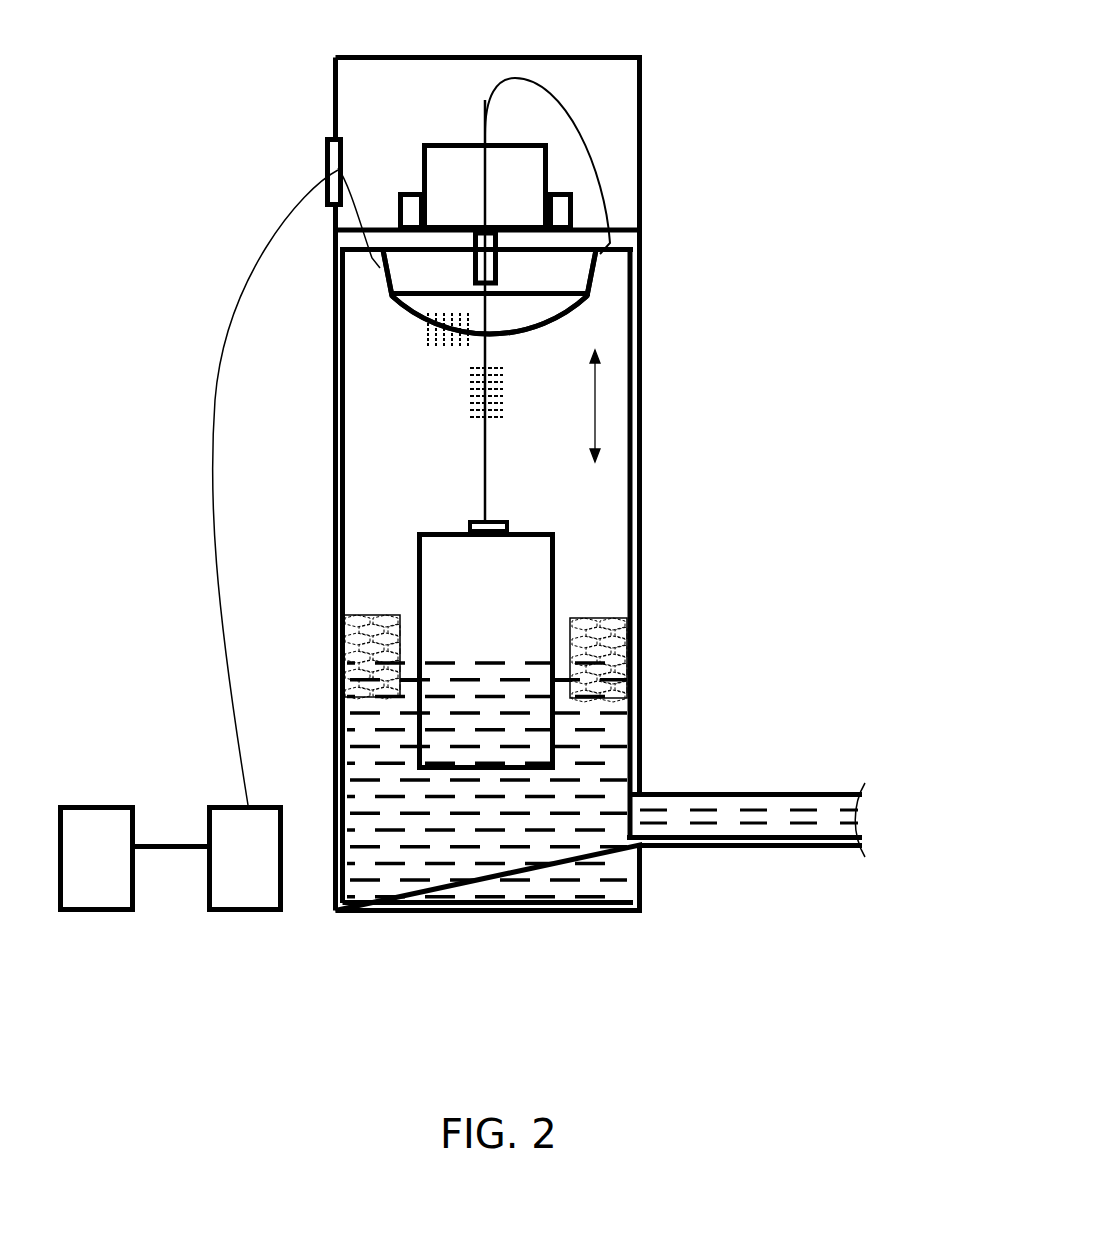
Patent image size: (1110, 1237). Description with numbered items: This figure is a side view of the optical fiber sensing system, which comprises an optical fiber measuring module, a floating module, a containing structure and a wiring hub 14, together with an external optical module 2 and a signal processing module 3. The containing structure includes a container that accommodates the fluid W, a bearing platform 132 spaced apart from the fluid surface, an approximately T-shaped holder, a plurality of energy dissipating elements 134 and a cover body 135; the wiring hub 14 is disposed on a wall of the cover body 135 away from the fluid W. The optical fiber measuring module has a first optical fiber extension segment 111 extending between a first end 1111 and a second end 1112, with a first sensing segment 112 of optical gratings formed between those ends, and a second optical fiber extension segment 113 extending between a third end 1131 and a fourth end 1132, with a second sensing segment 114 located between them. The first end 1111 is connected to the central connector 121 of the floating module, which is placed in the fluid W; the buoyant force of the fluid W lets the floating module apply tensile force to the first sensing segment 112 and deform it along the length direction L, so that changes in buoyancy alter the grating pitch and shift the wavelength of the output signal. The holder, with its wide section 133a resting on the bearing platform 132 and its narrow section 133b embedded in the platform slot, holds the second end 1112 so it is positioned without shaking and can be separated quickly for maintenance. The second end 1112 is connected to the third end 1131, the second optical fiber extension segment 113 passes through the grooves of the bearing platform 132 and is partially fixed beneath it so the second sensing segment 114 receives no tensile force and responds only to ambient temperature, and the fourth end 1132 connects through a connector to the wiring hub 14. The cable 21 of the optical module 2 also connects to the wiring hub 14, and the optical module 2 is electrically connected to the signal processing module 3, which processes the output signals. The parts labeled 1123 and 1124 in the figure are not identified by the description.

The optical module 2 is at (243, 893).
The signal processing module 3 is at (88, 893).
The cable 21 is at (222, 640).
The wiring hub 14 is at (325, 158).
The cover body 135 is at (333, 108).
The bearing platform 132 is at (627, 240).
The wide section 133a is at (453, 155).
The narrow section 133b is at (498, 264).
The support block 1123 is at (410, 212).
The second end 1112 is at (483, 170).
The first end 1111 is at (485, 455).
The first optical fiber extension segment 111 is at (490, 310).
The first sensing segment 112 is at (470, 388).
The second optical fiber extension segment 113 is at (535, 338).
The second sensing segment 114 is at (428, 335).
The curved bottom 1124 is at (585, 310).
The third end 1131 is at (600, 262).
The fourth end 1132 is at (380, 266).
The central connector 121 is at (507, 527).
The energy dissipating elements 134 is at (358, 652).
The fluid W is at (610, 770).
The length direction L is at (603, 406).